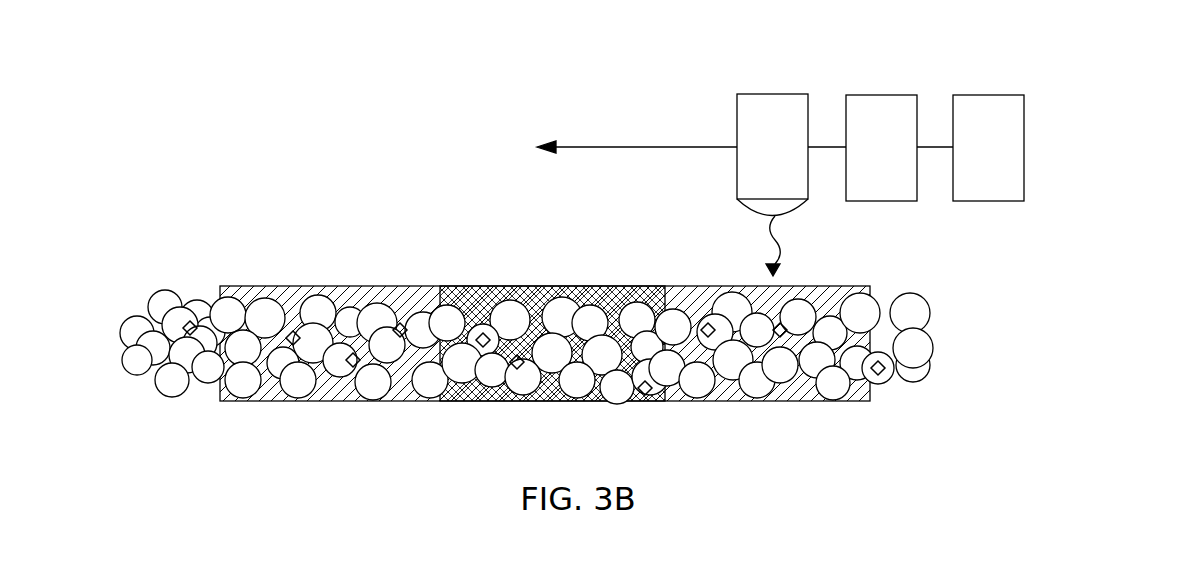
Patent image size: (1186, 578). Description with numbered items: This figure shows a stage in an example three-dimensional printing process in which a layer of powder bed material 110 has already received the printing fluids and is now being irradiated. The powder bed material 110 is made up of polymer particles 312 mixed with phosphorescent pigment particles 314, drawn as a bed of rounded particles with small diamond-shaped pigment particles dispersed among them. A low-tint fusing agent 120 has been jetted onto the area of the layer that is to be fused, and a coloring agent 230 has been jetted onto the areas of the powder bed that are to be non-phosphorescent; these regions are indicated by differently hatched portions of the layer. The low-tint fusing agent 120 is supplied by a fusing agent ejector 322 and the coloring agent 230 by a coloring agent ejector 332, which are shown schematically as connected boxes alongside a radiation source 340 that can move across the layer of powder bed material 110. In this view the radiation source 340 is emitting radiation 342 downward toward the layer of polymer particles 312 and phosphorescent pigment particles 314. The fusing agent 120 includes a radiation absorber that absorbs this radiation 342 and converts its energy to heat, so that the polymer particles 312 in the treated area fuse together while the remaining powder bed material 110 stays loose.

The powder bed material 110 is at (948, 332).
The low-tint fusing agent 120 is at (350, 288).
The coloring agent 230 is at (467, 290).
The polymer particles 312 is at (167, 303).
The phosphorescent pigment particles 314 is at (195, 322).
The fusing agent ejector 322 is at (862, 160).
The coloring agent ejector 332 is at (969, 160).
The radiation source 340 is at (753, 160).
The radiation 342 is at (763, 262).